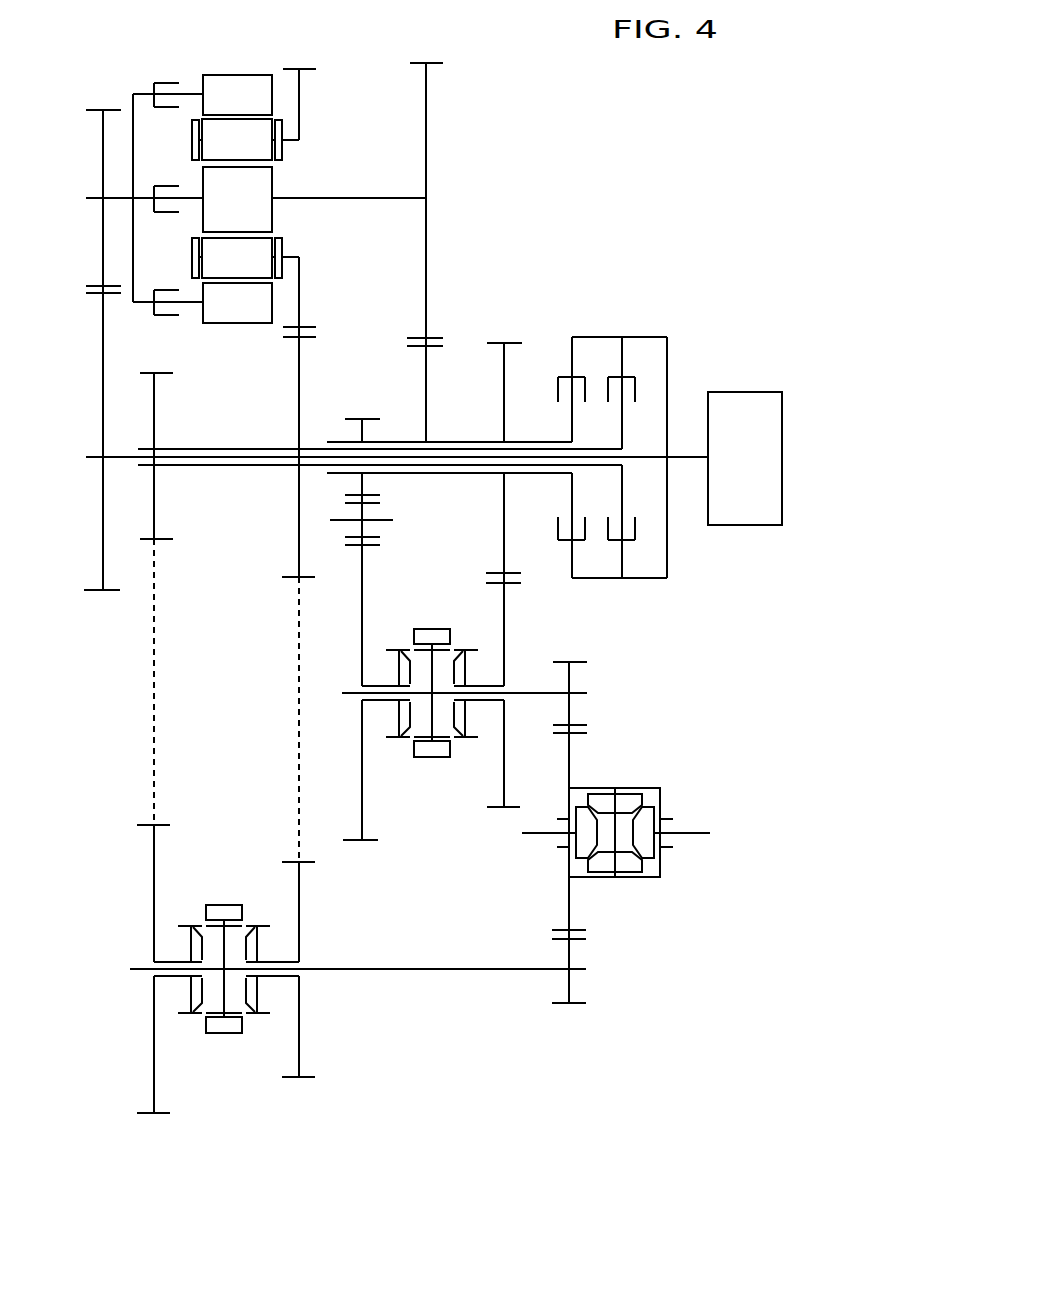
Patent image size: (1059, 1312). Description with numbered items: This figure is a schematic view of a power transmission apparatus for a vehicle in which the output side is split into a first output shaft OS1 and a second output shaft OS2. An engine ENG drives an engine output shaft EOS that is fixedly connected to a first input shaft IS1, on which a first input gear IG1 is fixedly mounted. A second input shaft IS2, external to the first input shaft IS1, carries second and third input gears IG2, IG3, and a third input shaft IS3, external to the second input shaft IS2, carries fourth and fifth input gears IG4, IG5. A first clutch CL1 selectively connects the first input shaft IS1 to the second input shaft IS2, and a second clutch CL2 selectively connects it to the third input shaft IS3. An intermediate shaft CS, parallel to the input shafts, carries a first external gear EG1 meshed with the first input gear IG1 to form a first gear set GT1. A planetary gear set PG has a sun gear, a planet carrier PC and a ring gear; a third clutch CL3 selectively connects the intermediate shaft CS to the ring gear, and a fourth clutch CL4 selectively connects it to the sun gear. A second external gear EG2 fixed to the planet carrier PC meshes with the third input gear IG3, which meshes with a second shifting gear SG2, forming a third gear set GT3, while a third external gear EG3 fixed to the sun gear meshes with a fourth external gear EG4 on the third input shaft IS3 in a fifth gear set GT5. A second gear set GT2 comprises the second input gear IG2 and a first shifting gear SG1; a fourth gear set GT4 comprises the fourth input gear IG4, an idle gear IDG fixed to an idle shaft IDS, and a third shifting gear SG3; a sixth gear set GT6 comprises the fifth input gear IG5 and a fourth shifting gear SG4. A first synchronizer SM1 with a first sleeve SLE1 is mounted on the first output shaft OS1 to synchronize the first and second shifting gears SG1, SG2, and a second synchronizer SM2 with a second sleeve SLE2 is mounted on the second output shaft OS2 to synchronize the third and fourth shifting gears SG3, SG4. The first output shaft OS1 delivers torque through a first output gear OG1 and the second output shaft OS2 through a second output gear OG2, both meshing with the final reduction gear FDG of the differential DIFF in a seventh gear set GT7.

The planetary gear set PG is at (217, 60).
The planet carrier PC is at (285, 243).
The intermediate shaft CS is at (122, 198).
The first clutch CL1 is at (634, 358).
The second clutch CL2 is at (584, 358).
The third clutch CL3 is at (135, 314).
The fourth clutch CL4 is at (135, 188).
The first external gear EG1 is at (103, 131).
The second external gear EG2 is at (299, 293).
The third external gear EG3 is at (426, 253).
The fourth external gear EG4 is at (426, 366).
The first input gear IG1 is at (103, 388).
The second input gear IG2 is at (155, 405).
The third input gear IG3 is at (299, 373).
The fourth input gear IG4 is at (361, 430).
The fifth input gear IG5 is at (504, 391).
The first input shaft IS1 is at (203, 465).
The second input shaft IS2 is at (248, 466).
The third input shaft IS3 is at (466, 475).
The idle shaft IDS is at (342, 522).
The idle gear IDG is at (365, 528).
The first shifting gear SG1 is at (154, 850).
The second shifting gear SG2 is at (299, 885).
The third shifting gear SG3 is at (362, 611).
The fourth shifting gear SG4 is at (504, 620).
The first synchronizer SM1 is at (233, 1051).
The second synchronizer SM2 is at (440, 773).
The first sleeve SLE1 is at (215, 1033).
The second sleeve SLE2 is at (423, 757).
The first output shaft OS1 is at (327, 972).
The second output shaft OS2 is at (533, 697).
The first output gear OG1 is at (569, 955).
The second output gear OG2 is at (569, 677).
The final reduction gear FDG is at (569, 757).
The differential DIFF is at (677, 792).
The engine ENG is at (745, 458).
The engine output shaft EOS is at (687, 460).
The first gear set GT1 is at (100, 610).
The second gear set GT2 is at (147, 1132).
The third gear set GT3 is at (296, 1097).
The fourth gear set GT4 is at (360, 860).
The fifth gear set GT5 is at (438, 51).
The sixth gear set GT6 is at (502, 827).
The seventh gear set GT7 is at (567, 1023).